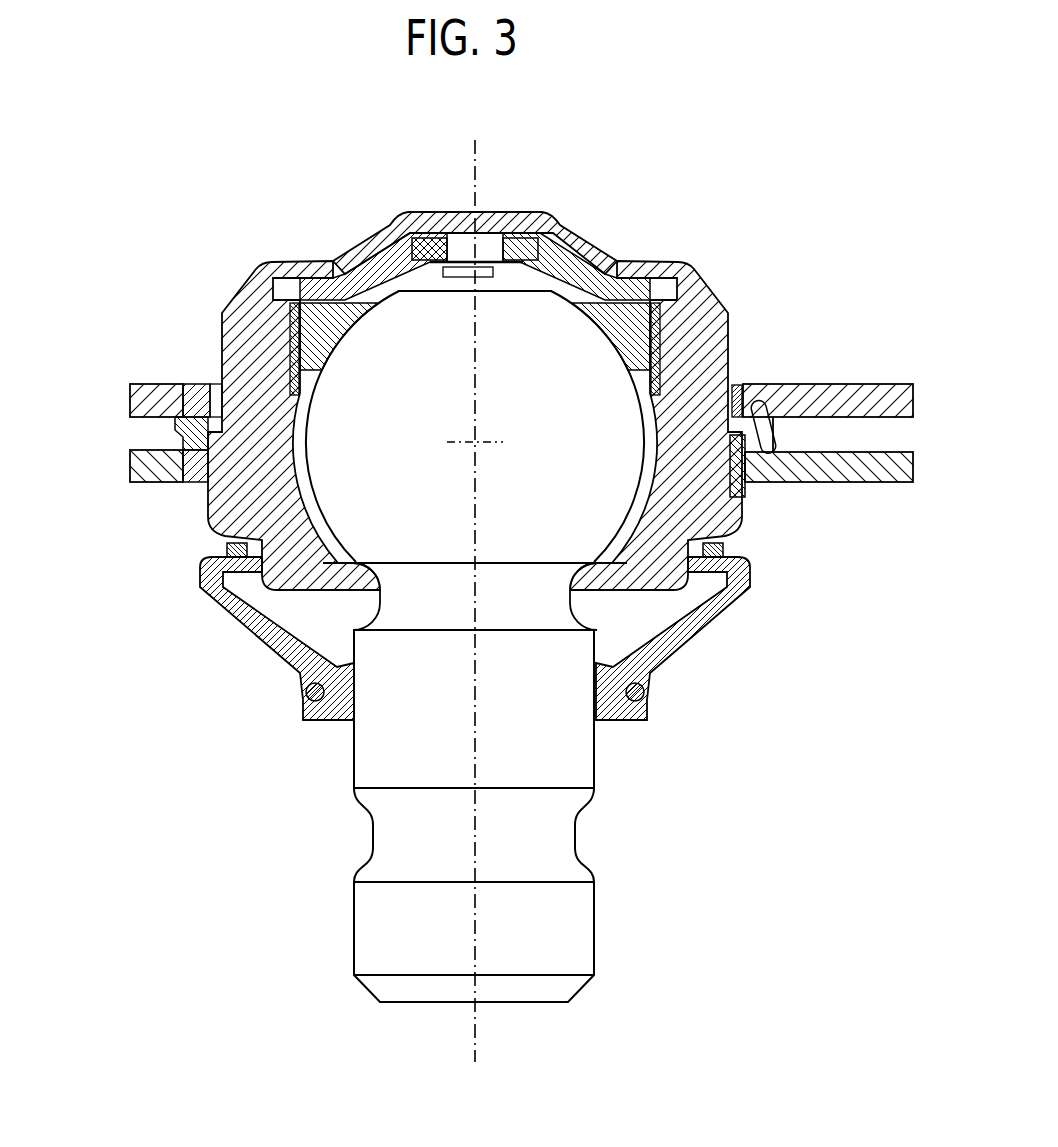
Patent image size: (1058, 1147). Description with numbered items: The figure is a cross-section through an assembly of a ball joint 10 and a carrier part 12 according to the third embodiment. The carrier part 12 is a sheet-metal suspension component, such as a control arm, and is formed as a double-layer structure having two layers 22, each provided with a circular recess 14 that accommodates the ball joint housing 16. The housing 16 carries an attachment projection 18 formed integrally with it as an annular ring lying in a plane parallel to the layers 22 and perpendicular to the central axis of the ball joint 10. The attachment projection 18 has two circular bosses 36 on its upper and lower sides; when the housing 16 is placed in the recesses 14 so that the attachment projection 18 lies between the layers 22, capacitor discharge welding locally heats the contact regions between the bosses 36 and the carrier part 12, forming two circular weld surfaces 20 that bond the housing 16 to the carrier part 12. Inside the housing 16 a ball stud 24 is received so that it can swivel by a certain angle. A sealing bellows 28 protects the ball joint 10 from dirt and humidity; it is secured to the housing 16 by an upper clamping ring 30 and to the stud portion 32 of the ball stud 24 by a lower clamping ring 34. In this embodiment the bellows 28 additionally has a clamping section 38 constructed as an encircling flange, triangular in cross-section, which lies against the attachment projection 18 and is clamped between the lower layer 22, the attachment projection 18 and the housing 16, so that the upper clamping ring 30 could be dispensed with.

The ball joint 10 is at (199, 652).
The carrier part 12 is at (122, 380).
The circular recess 14 is at (737, 395).
The ball joint housing 16 is at (253, 308).
The attachment projection 18 is at (778, 432).
The weld surfaces 20 is at (768, 412).
The layers 22 is at (130, 403).
The ball stud 24 is at (547, 523).
The sealing bellows 28 is at (660, 672).
The upper clamping ring 30 is at (227, 550).
The stud portion 32 is at (386, 768).
The lower clamping ring 34 is at (310, 692).
The circular bosses 36 is at (182, 413).
The clamping section 38 is at (750, 450).